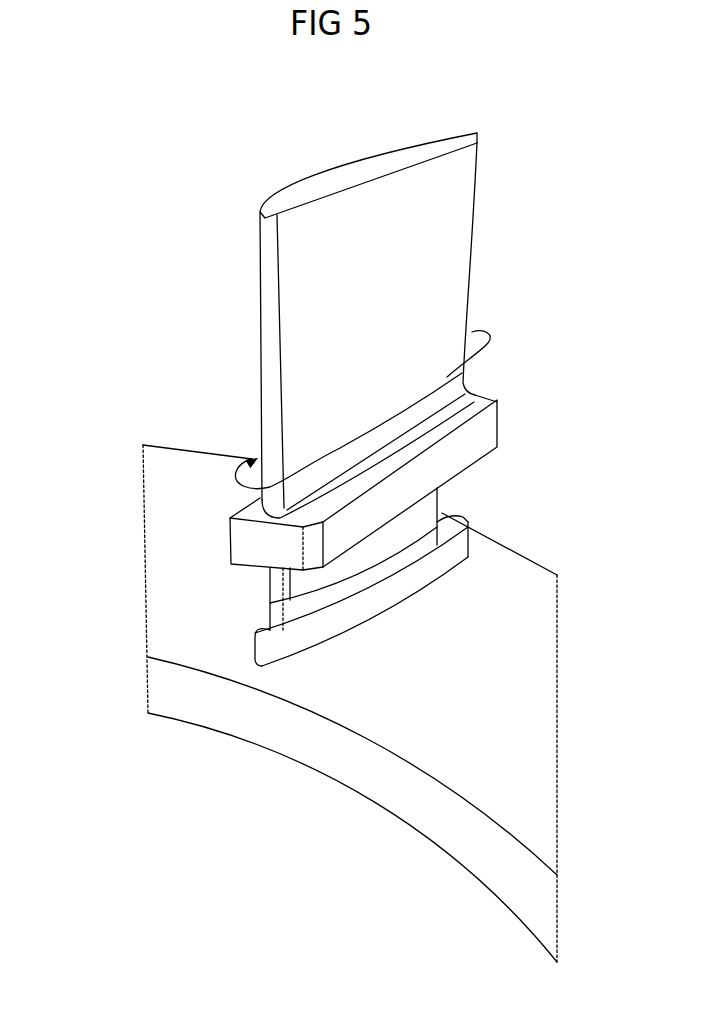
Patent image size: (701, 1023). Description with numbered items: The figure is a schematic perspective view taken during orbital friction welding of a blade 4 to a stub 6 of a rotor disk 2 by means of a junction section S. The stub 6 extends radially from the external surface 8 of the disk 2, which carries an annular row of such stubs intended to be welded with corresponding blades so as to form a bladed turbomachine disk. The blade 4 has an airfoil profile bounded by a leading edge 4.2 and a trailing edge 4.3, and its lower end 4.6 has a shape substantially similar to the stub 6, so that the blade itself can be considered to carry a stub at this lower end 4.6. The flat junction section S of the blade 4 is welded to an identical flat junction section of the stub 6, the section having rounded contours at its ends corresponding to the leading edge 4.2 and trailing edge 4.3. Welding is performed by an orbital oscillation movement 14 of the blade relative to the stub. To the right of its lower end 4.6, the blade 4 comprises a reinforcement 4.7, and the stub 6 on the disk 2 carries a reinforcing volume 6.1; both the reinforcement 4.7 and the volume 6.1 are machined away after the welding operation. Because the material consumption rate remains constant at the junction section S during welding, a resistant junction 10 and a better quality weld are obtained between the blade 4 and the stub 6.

The rotor disk 2 is at (160, 185).
The blade 4 is at (457, 202).
The leading edge 4.2 is at (225, 315).
The trailing edge 4.3 is at (515, 128).
The lower end 4.6 is at (191, 597).
The reinforcement 4.7 is at (196, 529).
The stub 6 is at (480, 493).
The reinforcing volume 6.1 is at (461, 567).
The external surface 8 is at (540, 668).
The junction 10 is at (386, 580).
The orbital oscillation movement 14 is at (472, 332).
The junction section S is at (303, 600).